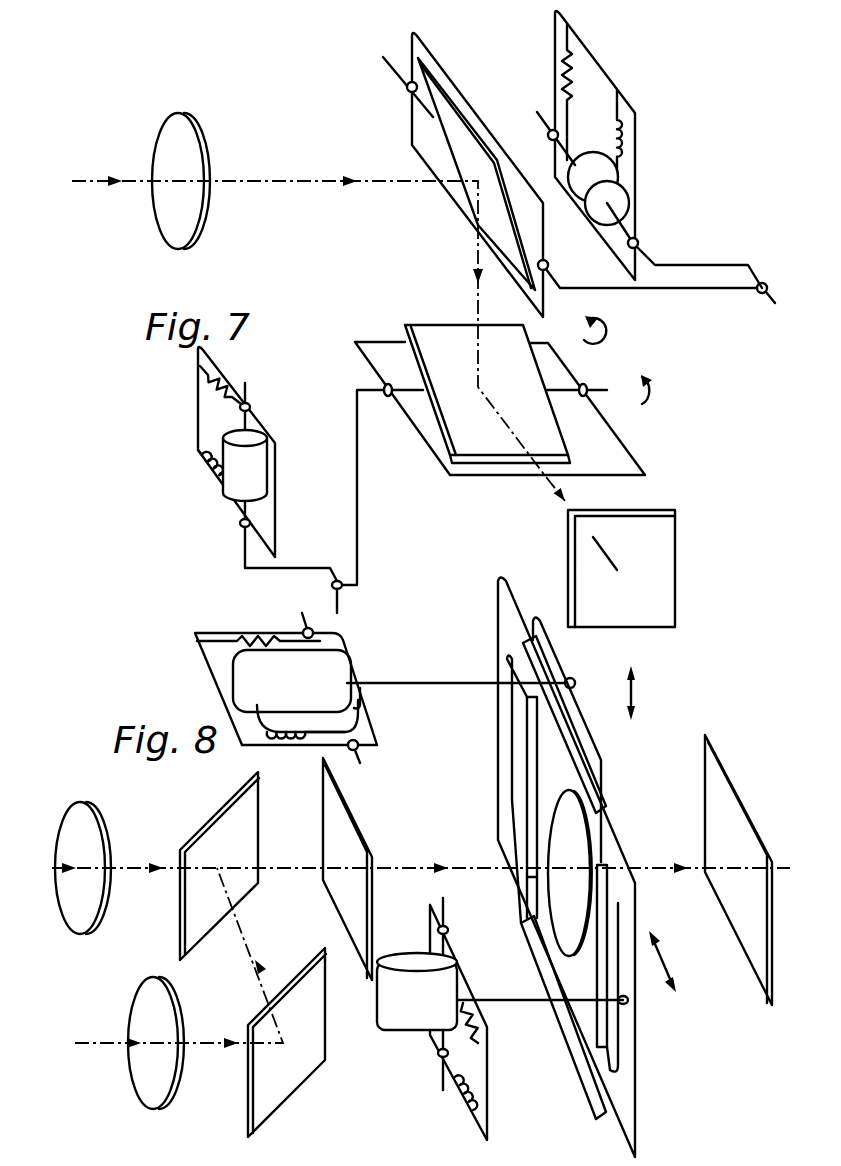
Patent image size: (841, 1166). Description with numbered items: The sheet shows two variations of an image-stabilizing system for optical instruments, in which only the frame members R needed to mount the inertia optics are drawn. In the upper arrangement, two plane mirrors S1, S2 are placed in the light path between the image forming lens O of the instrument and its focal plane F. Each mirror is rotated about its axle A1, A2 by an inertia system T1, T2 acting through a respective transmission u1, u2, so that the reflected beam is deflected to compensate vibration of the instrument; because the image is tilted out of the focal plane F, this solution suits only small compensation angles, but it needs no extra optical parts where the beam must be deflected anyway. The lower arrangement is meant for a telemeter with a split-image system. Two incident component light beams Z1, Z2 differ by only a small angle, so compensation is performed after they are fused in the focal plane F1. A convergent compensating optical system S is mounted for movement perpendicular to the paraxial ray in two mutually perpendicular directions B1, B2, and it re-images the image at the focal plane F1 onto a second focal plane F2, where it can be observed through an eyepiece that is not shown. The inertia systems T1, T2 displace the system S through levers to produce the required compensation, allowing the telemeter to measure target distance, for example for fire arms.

In FIG. 7, the image forming lens O is at (168, 160).
In FIG. 7, the axle A1 is at (561, 184).
In FIG. 7, the plane mirror S1 is at (457, 147).
In FIG. 7, the frame member R is at (587, 54).
In FIG. 8, the frame member R is at (210, 683).
In FIG. 7, the inertia system T1 is at (590, 174).
In FIG. 8, the inertia system T1 is at (307, 677).
In FIG. 7, the transmission u1 is at (746, 303).
In FIG. 7, the plane mirror S2 is at (457, 352).
In FIG. 7, the axle A2 is at (481, 480).
In FIG. 7, the focal plane F is at (587, 570).
In FIG. 7, the inertia system T2 is at (233, 467).
In FIG. 8, the inertia system T2 is at (410, 1012).
In FIG. 7, the transmission u2 is at (334, 576).
In FIG. 8, the direction of movement B1 is at (565, 869).
In FIG. 8, the direction of movement B2 is at (566, 864).
In FIG. 8, the compensating optical system S is at (572, 842).
In FIG. 8, the focal plane F1 is at (340, 850).
In FIG. 8, the second focal plane F2 is at (720, 815).
In FIG. 8, the incident component light beam Z1 is at (112, 866).
In FIG. 8, the incident component light beam Z2 is at (183, 1039).